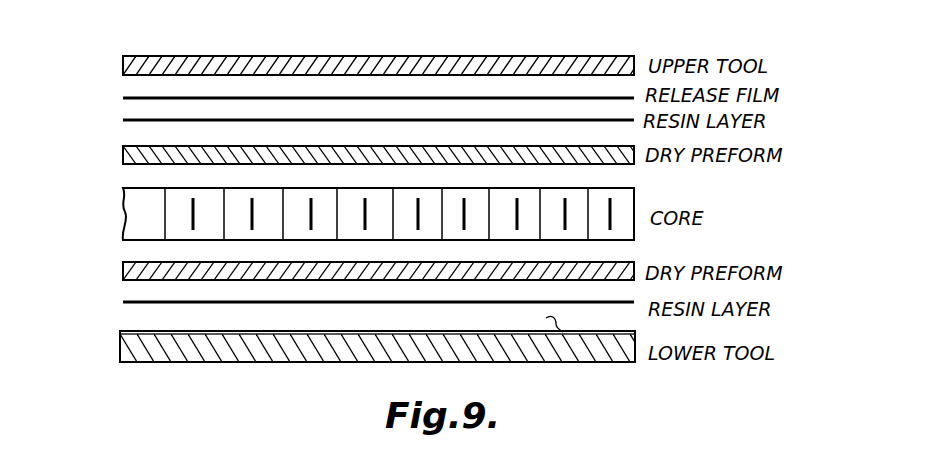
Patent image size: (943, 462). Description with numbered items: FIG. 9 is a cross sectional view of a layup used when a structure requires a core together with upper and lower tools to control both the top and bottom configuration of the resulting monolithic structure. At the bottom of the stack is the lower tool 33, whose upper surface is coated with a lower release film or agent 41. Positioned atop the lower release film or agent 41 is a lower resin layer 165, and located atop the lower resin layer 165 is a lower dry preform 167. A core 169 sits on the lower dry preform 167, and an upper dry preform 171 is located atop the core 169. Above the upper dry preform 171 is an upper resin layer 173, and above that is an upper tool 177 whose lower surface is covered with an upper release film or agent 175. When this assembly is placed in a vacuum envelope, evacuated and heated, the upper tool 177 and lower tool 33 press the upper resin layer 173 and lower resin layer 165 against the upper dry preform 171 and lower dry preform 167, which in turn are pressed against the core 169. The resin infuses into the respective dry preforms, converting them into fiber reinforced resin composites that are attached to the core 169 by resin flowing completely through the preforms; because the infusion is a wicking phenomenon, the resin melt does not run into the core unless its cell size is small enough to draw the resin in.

The upper tool 177 is at (500, 64).
The upper release film or agent 175 is at (124, 98).
The upper resin layer 173 is at (124, 120).
The upper dry preform 171 is at (124, 152).
The core 169 is at (124, 205).
The lower dry preform 167 is at (124, 270).
The lower resin layer 165 is at (124, 302).
The lower release film or agent 41 is at (120, 343).
The lower tool 33 is at (208, 363).